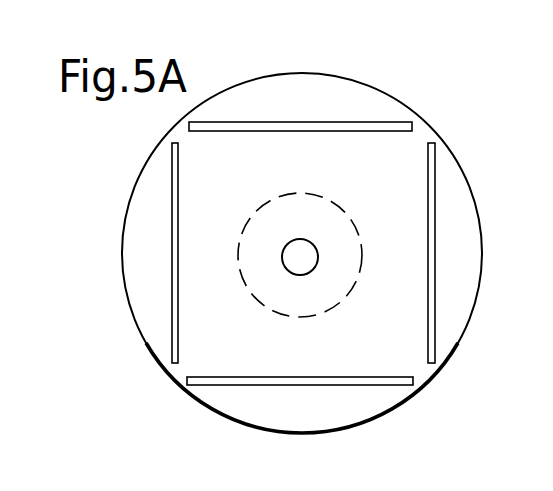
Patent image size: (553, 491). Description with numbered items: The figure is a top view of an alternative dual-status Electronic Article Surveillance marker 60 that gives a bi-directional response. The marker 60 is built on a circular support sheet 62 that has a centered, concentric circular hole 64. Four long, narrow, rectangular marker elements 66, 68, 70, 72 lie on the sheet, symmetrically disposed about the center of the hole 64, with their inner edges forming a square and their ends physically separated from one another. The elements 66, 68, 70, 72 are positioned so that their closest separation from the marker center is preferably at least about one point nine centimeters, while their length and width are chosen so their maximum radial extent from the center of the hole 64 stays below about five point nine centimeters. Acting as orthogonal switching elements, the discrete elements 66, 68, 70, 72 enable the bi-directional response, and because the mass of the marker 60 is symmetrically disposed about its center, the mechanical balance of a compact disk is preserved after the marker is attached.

The dual-status Electronic Article Surveillance (EAS) marker 60 is at (452, 117).
The circular support sheet 62 is at (465, 177).
The circular hole 64 is at (288, 263).
The marker element 66 is at (172, 198).
The marker element 68 is at (365, 122).
The marker element 70 is at (434, 303).
The marker element 72 is at (250, 386).